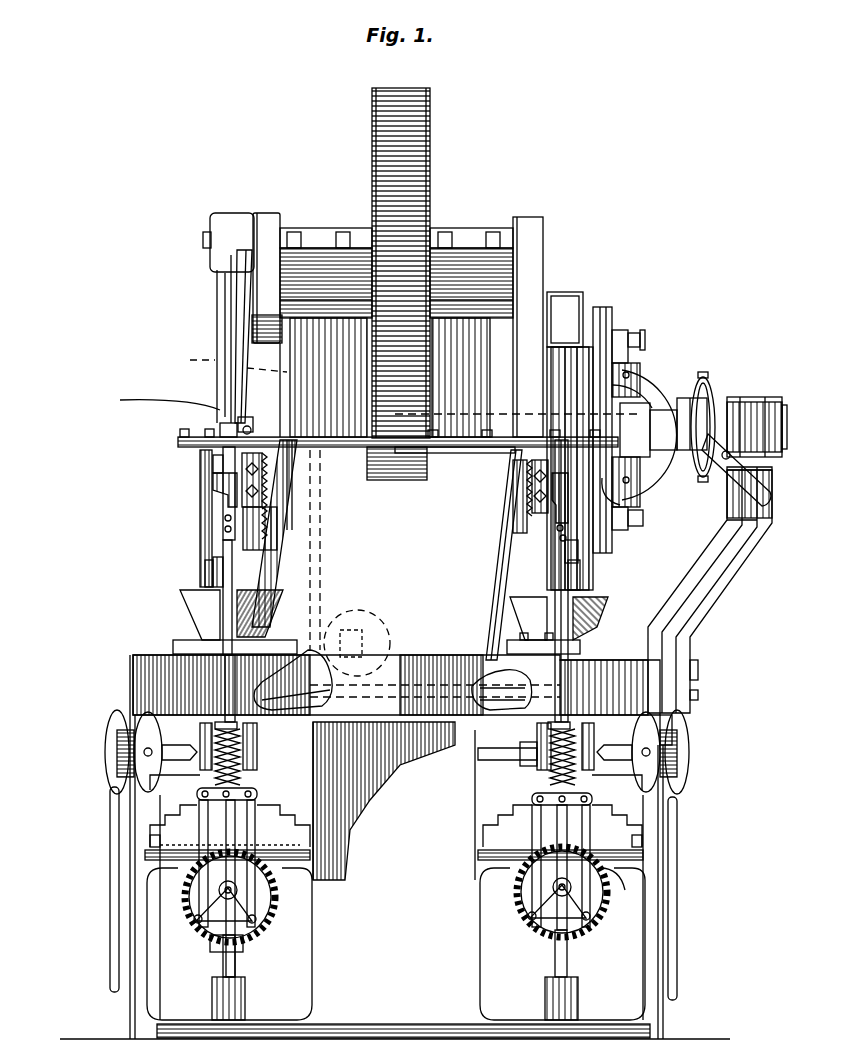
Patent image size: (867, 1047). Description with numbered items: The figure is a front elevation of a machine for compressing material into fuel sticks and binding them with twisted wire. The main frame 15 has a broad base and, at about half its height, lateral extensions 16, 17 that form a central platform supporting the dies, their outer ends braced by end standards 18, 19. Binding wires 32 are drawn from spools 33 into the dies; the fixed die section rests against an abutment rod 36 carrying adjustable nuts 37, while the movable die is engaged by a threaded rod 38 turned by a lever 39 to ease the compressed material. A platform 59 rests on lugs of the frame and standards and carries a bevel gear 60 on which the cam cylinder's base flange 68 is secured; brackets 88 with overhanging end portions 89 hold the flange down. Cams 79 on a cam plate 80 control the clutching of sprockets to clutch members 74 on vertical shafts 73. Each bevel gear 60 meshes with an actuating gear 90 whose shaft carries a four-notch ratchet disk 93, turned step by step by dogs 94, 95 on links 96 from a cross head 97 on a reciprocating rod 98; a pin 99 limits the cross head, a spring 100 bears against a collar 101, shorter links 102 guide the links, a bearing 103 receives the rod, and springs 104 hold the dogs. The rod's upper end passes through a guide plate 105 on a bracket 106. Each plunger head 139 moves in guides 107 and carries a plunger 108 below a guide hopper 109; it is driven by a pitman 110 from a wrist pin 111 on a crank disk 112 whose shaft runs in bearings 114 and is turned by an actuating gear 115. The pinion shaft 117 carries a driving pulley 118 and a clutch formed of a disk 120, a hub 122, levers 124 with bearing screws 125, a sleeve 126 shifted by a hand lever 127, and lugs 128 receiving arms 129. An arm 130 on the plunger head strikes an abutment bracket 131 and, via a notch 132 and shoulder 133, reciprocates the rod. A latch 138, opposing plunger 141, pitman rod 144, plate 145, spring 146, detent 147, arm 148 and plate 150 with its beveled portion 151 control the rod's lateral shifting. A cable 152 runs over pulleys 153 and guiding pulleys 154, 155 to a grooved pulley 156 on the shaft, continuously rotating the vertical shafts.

The main frame 15 is at (394, 801).
The lateral extension 16 is at (140, 660).
The lateral extension 17 is at (665, 703).
The end standard 18 is at (135, 915).
The end standard 19 is at (655, 945).
The binding wire 32 is at (185, 797).
The spool 33 is at (108, 765).
The rod 36 is at (490, 762).
The abutment nut 37 is at (522, 765).
The rod 38 is at (672, 722).
The lever 39 is at (110, 962).
The platform 59 is at (158, 878).
The bevel gear 60 is at (148, 850).
The base flange 68 is at (285, 828).
The vertical shaft 73 is at (238, 965).
The clutch member 74 is at (245, 942).
The cam 79 is at (180, 830).
The cam plate 80 is at (300, 805).
The bracket 88 is at (300, 860).
The overhanging end portion 89 is at (510, 840).
The actuating gear 90 is at (530, 905).
The ratchet disk 93 is at (615, 893).
The dog 94 is at (592, 915).
The dog 95 is at (210, 930).
The link 96 is at (280, 895).
The cross head 97 is at (258, 792).
The reciprocating rod 98 is at (605, 602).
The pin 99 is at (280, 835).
The spring 100 is at (238, 740).
The collar 101 is at (500, 713).
The shorter link 102 is at (260, 900).
The bearing 103 is at (185, 930).
The spring 104 is at (578, 930).
The guide plate 105 is at (478, 455).
The bracket 106 is at (262, 498).
The guide 107 is at (268, 545).
The plunger 108 is at (210, 553).
The guide hopper 109 is at (195, 605).
The pitman 110 is at (645, 365).
The wrist pin 111 is at (204, 240).
The crank disk 112 is at (272, 222).
The bearing 114 is at (462, 300).
The actuating gear 115 is at (392, 482).
The shaft 117 is at (655, 470).
The driving pulley 118 is at (560, 340).
The disk 120 is at (605, 318).
The hub 122 is at (650, 500).
The lever 124 is at (640, 385).
The bearing screw 125 is at (636, 332).
The sleeve 126 is at (712, 378).
The hand operated lever 127 is at (735, 417).
The lug 128 is at (660, 402).
The arm 129 is at (690, 397).
The arm 130 is at (214, 484).
The abutment bracket 131 is at (205, 568).
The notch 132 is at (565, 553).
The shoulder 133 is at (552, 527).
The latch 138 is at (246, 417).
The plunger head 139 is at (215, 510).
The plunger 141 is at (240, 432).
The pitman rod 144 is at (495, 608).
The plate 145 is at (182, 441).
The spring 146 is at (265, 520).
The detent 147 is at (152, 396).
The arm 148 is at (205, 465).
The plate 150 is at (224, 520).
The beveled portion 151 is at (224, 500).
The cable 152 is at (330, 703).
The pulley 153 is at (120, 702).
The guiding pulley 154 is at (285, 615).
The guiding pulley 155 is at (382, 655).
The grooved pulley 156 is at (219, 357).